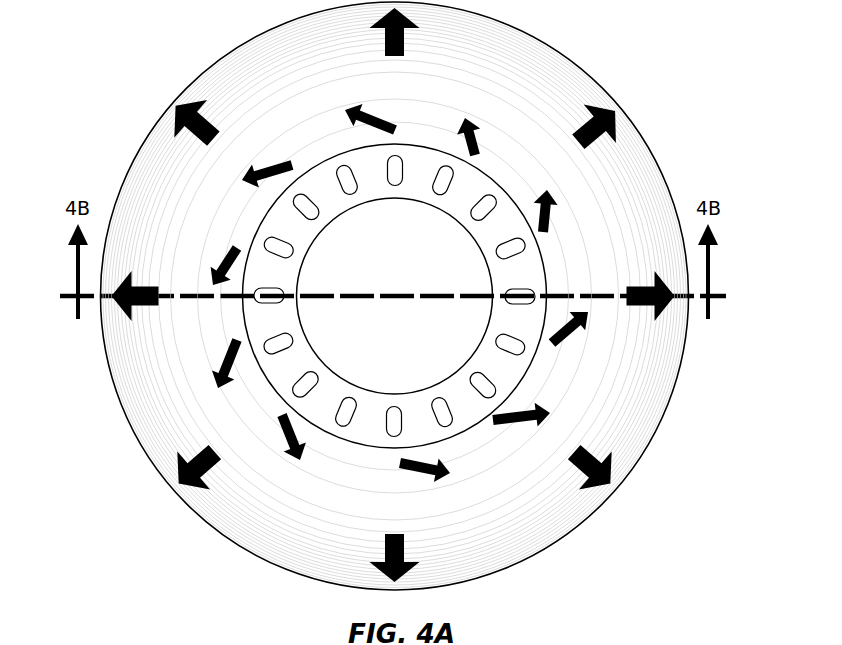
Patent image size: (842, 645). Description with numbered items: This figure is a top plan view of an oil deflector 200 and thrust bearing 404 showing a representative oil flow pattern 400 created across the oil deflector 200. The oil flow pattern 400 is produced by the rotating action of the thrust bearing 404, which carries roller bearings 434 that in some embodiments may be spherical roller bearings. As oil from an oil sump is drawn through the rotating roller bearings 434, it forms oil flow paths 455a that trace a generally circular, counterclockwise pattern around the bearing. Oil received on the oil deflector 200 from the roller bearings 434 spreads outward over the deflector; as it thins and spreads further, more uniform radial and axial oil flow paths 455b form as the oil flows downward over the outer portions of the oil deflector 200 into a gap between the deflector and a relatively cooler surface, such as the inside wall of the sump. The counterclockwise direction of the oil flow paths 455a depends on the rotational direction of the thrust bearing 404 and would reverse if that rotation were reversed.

The oil flow pattern 400 is at (605, 47).
The oil deflector 200 is at (520, 563).
The thrust bearing 404 is at (415, 394).
The roller bearings 434 is at (357, 188).
The oil flow paths 455a is at (345, 107).
The oil flow paths 455b is at (172, 113).